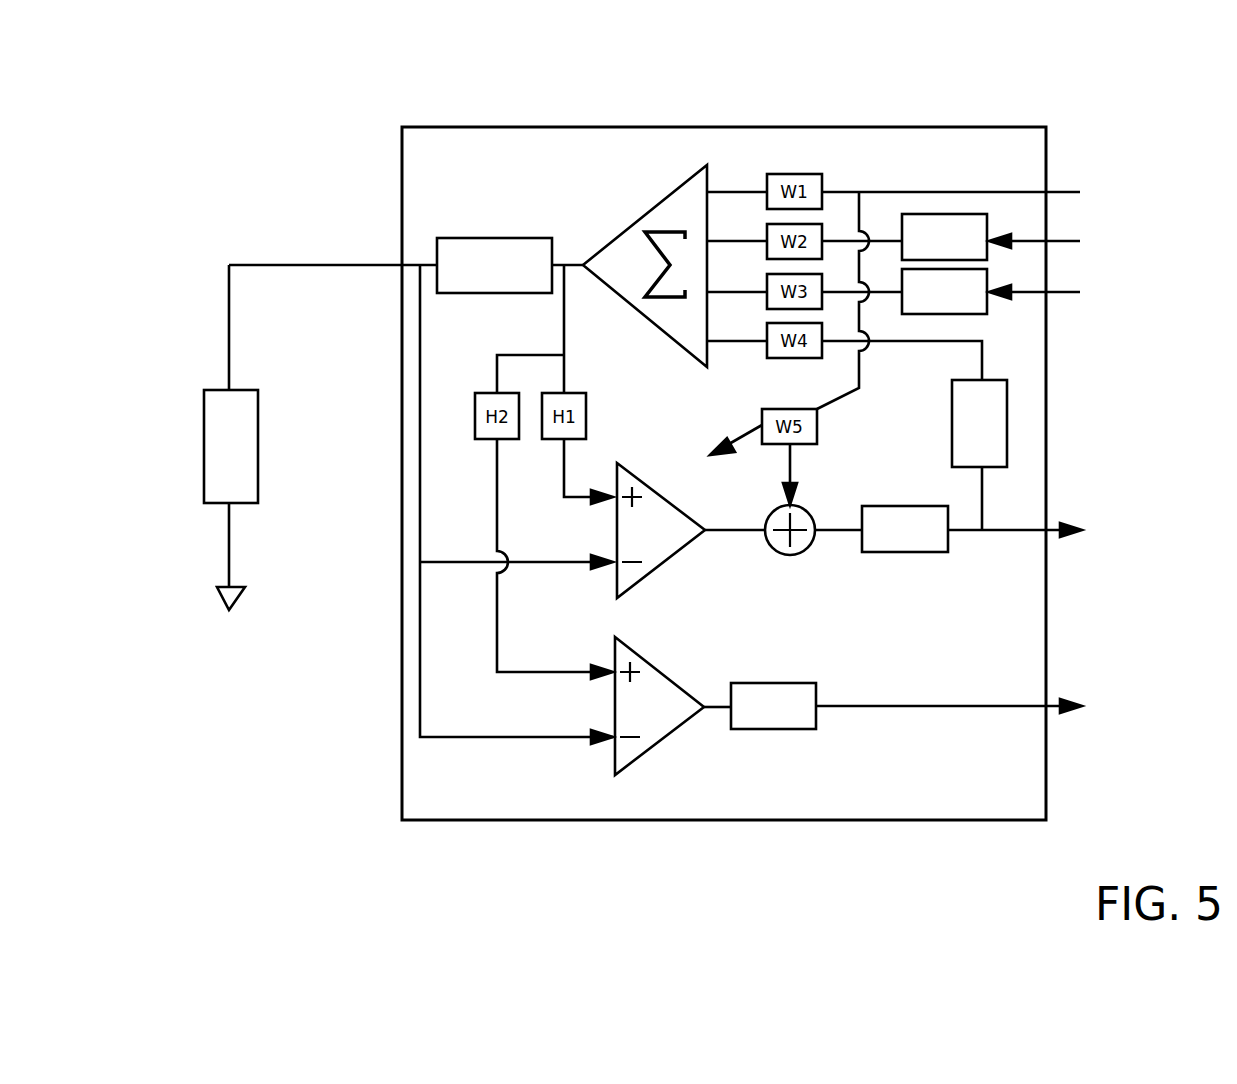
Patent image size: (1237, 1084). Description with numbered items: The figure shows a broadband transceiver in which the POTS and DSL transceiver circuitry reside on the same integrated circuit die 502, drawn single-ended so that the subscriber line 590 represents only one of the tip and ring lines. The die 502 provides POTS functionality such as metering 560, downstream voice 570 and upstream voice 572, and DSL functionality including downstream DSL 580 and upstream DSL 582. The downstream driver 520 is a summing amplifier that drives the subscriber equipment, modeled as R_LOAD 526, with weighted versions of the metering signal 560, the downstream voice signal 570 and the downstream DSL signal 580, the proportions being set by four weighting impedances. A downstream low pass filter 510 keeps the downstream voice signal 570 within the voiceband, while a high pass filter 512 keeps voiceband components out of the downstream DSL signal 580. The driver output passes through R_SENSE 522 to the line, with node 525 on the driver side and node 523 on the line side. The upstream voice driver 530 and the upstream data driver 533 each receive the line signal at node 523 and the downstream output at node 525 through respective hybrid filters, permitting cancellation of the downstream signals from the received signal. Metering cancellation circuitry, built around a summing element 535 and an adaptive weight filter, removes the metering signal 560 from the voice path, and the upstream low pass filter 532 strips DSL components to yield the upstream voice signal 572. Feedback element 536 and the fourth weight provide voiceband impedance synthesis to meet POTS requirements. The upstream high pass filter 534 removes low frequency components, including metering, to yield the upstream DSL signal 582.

The integrated circuit die 502 is at (617, 127).
The downstream low pass filter 510 is at (988, 222).
The high pass filter 512 is at (990, 304).
The downstream driver 520 is at (647, 210).
The R_SENSE 522 is at (507, 296).
The node 523 is at (420, 260).
The node 525 is at (567, 257).
The R_LOAD 526 is at (275, 437).
The upstream voice driver 530 is at (592, 530).
The upstream low pass filter 532 is at (908, 555).
The upstream data driver 533 is at (661, 706).
The upstream high pass filter 534 is at (770, 681).
The metering cancellation summer 535 is at (806, 503).
The feedback element 536 is at (914, 435).
The metering signal 560 is at (1028, 191).
The downstream voice signal 570 is at (1090, 240).
The upstream voice signal 572 is at (1070, 531).
The downstream DSL signal 580 is at (1081, 293).
The upstream DSL signal 582 is at (995, 706).
The subscriber line 590 is at (229, 330).